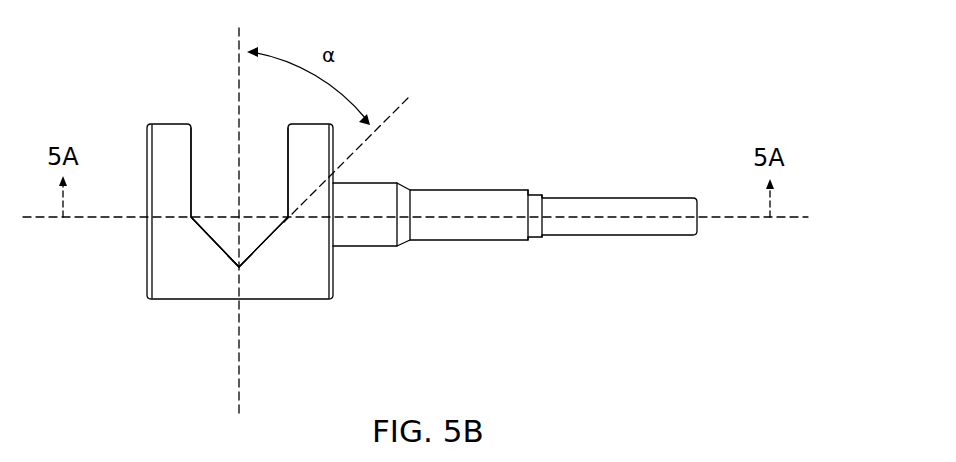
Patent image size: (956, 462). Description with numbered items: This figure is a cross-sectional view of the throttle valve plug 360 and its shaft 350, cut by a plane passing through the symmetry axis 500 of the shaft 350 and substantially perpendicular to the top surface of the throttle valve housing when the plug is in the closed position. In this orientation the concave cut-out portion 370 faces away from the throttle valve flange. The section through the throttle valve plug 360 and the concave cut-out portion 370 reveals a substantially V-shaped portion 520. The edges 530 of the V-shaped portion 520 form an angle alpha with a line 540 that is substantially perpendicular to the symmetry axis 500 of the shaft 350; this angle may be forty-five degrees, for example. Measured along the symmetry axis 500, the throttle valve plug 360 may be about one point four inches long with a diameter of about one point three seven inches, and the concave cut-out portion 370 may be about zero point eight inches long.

The shaft 350 is at (435, 188).
The throttle valve plug 360 is at (318, 300).
The concave cut-out portion 370 is at (220, 148).
The symmetry axis 500 is at (792, 218).
The V-shaped portion 520 is at (212, 243).
The edges 530 is at (252, 257).
The line 540 is at (238, 73).